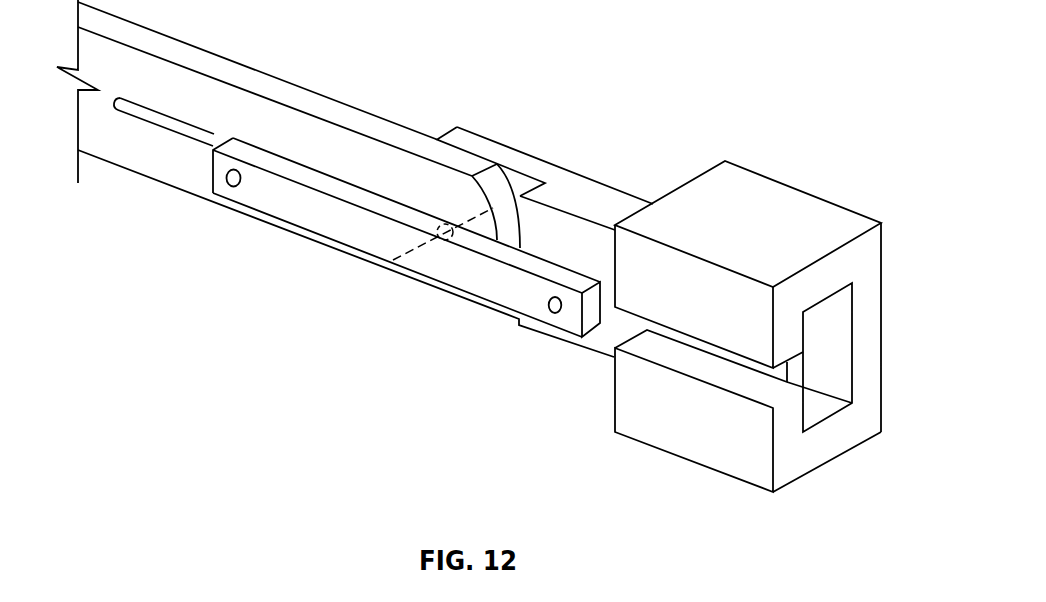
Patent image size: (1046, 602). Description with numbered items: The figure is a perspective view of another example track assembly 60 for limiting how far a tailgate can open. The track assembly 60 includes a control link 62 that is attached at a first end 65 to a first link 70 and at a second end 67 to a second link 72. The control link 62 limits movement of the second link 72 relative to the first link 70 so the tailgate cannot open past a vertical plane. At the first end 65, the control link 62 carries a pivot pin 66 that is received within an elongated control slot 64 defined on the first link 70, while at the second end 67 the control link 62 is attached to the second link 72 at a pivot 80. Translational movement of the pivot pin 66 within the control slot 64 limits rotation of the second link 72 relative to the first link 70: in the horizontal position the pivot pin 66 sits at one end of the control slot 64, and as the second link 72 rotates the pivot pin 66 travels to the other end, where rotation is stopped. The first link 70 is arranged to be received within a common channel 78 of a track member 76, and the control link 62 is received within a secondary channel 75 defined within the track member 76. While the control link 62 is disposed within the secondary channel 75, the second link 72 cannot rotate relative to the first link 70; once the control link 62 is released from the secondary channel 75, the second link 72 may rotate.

The track assembly 60 is at (694, 79).
The control link 62 is at (419, 206).
The control slot 64 is at (153, 137).
The first end 65 is at (218, 141).
The pivot pin 66 is at (232, 191).
The second end 67 is at (588, 274).
The first link 70 is at (290, 130).
The second link 72 is at (523, 158).
The secondary channel 75 is at (737, 368).
The track member 76 is at (781, 281).
The common channel 78 is at (818, 349).
The pivot 80 is at (553, 313).